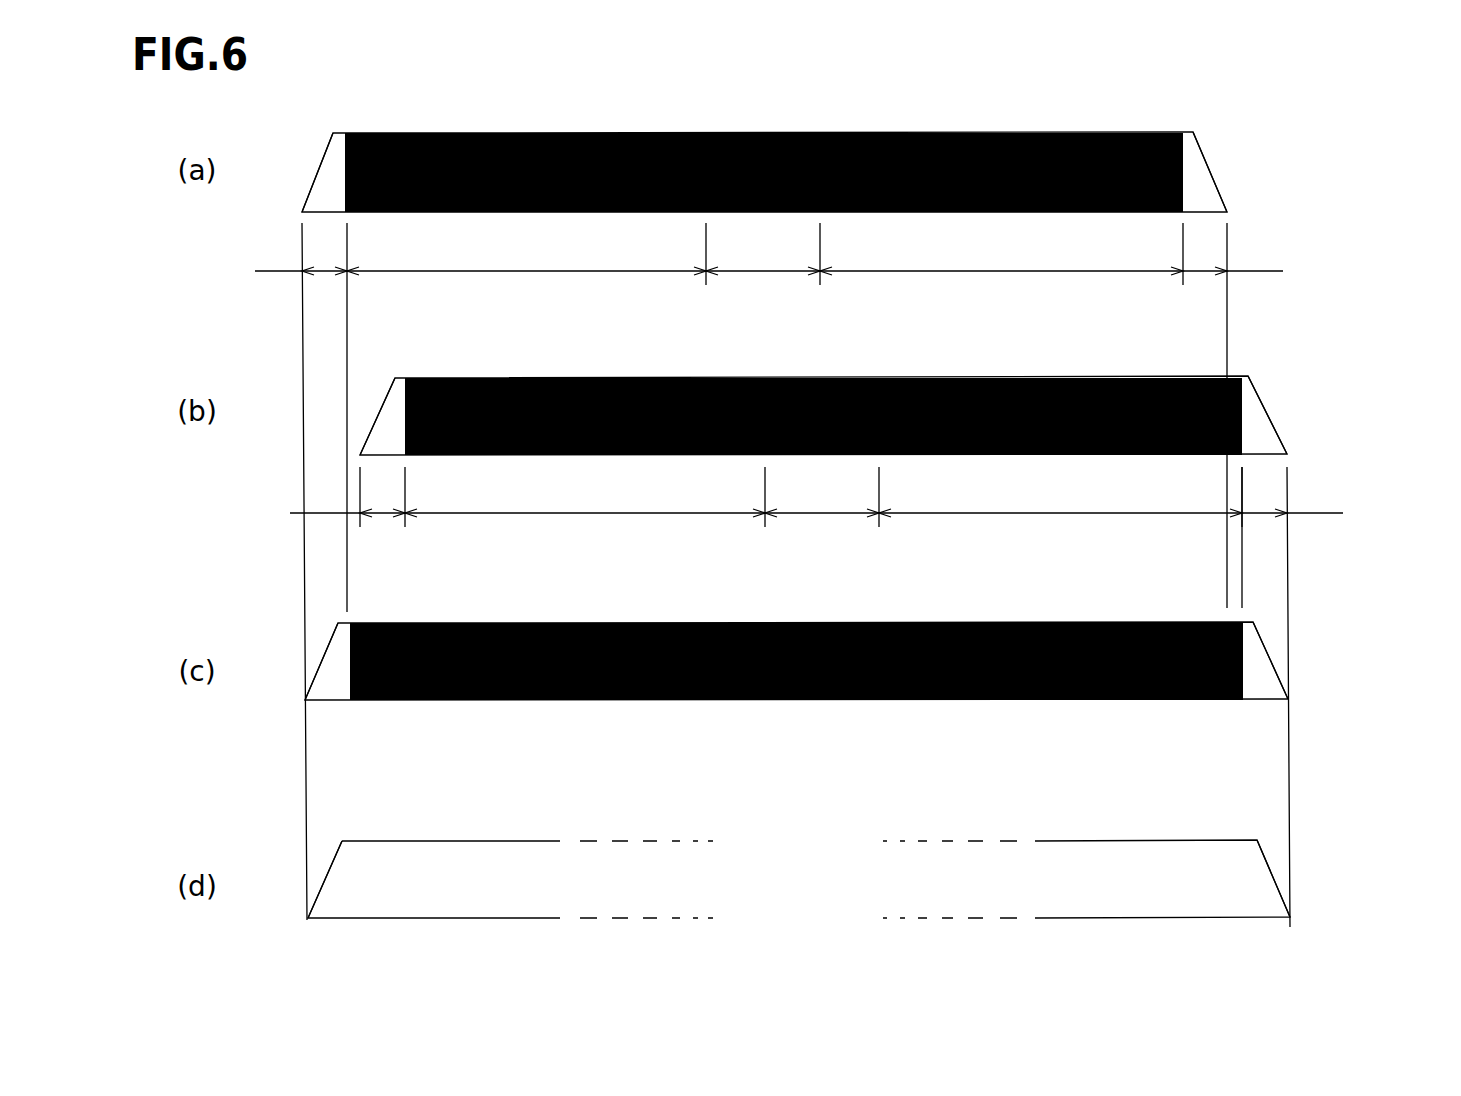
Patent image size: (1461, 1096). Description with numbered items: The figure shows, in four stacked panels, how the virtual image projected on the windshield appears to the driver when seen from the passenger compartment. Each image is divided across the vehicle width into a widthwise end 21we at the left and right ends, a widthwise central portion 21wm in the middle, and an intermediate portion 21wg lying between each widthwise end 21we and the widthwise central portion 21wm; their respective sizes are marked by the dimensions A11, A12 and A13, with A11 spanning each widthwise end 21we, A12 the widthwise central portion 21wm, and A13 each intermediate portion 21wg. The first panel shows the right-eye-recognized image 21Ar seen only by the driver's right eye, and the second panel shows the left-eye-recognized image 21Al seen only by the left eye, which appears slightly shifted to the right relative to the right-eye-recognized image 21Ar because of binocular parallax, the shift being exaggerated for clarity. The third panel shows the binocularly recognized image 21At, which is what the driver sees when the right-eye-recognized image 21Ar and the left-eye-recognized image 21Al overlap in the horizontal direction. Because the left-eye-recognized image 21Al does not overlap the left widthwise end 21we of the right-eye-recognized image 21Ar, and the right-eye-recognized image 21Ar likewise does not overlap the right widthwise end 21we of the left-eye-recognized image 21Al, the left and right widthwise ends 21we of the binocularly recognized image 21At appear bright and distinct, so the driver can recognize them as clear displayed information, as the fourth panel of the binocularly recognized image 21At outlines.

The widthwise end 21we is at (1207, 880).
The intermediate portion 21wg is at (1015, 880).
The widthwise central portion 21wm is at (763, 880).
The right-eye-recognized image 21Ar is at (1230, 181).
The left-eye-recognized image 21Al is at (1287, 426).
The binocularly recognized image 21At is at (1285, 862).
The size of widthwise end A11 is at (795, 575).
The size of widthwise central portion A12 is at (792, 375).
The size of intermediate portion A13 is at (794, 375).